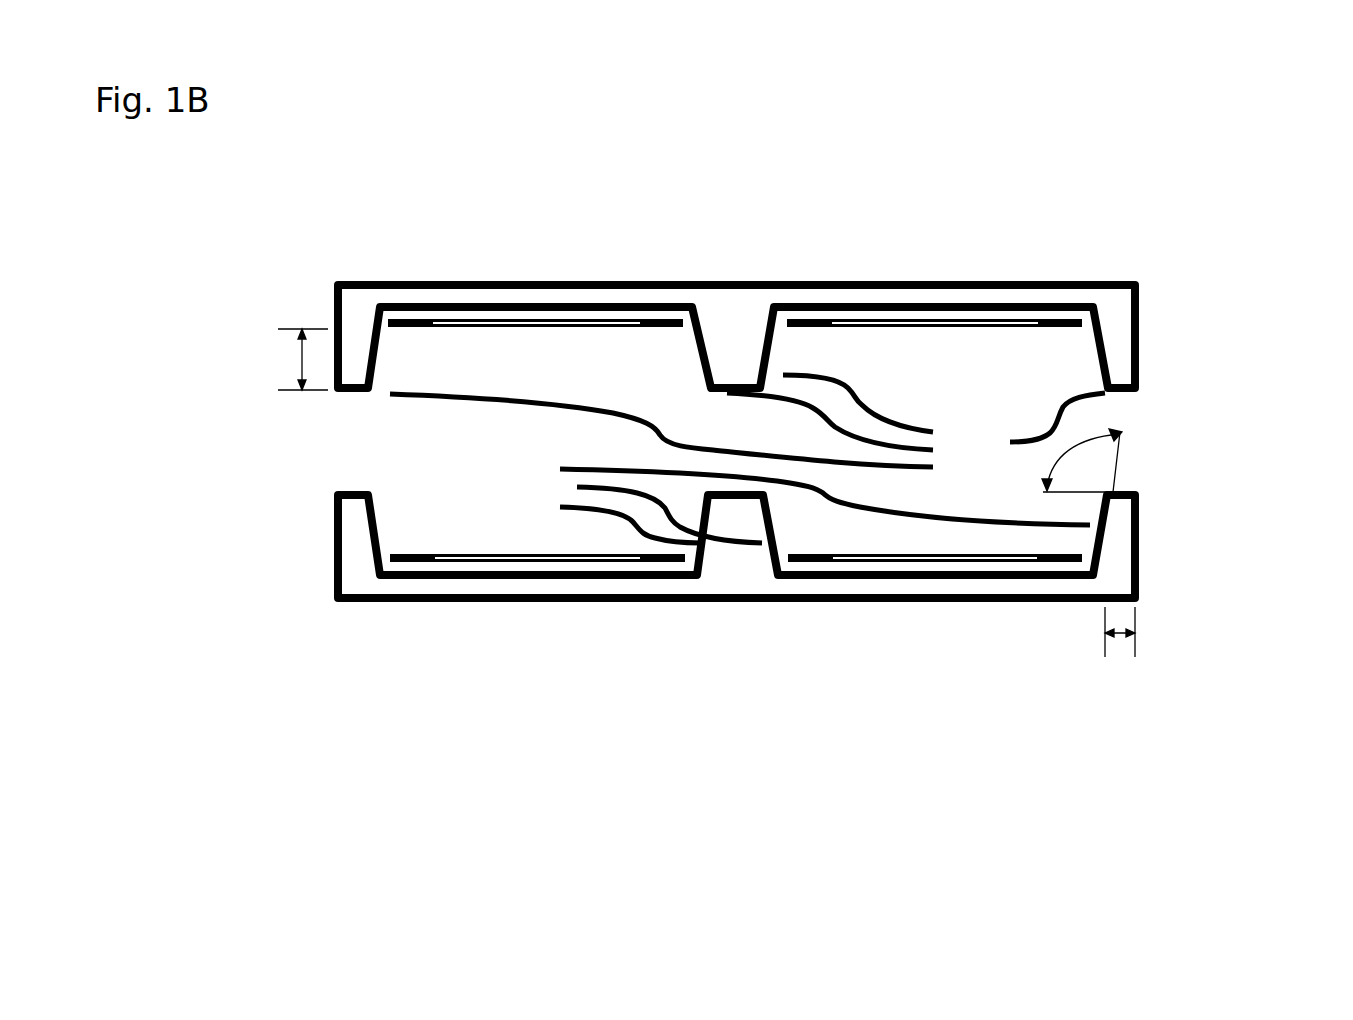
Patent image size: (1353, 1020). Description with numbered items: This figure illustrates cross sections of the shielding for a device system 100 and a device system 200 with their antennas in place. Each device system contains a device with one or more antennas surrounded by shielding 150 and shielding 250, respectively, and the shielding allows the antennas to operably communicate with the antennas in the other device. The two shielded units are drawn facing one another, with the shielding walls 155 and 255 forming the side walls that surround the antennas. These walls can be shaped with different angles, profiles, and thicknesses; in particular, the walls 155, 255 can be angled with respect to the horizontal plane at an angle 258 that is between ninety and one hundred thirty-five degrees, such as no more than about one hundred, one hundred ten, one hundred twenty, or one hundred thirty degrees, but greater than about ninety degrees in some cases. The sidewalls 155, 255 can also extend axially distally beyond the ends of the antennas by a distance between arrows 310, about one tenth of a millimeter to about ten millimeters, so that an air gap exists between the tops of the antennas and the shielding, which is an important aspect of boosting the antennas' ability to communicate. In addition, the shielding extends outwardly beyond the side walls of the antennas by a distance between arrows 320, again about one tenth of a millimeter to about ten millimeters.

The device system 100 is at (353, 638).
The shielding 150 is at (748, 602).
The shielding wall 155 is at (390, 538).
The device system 200 is at (410, 281).
The shielding 250 is at (746, 337).
The shielding wall 255 is at (747, 430).
The angle 258 is at (1123, 468).
The distance between arrows 310 is at (278, 355).
The distance between arrows 320 is at (1140, 638).